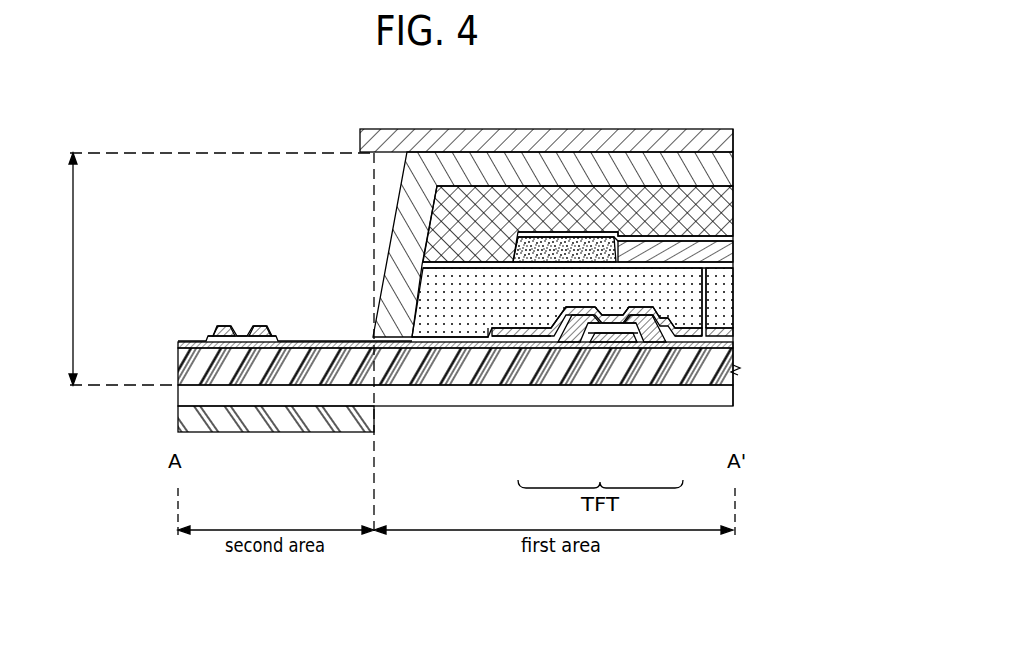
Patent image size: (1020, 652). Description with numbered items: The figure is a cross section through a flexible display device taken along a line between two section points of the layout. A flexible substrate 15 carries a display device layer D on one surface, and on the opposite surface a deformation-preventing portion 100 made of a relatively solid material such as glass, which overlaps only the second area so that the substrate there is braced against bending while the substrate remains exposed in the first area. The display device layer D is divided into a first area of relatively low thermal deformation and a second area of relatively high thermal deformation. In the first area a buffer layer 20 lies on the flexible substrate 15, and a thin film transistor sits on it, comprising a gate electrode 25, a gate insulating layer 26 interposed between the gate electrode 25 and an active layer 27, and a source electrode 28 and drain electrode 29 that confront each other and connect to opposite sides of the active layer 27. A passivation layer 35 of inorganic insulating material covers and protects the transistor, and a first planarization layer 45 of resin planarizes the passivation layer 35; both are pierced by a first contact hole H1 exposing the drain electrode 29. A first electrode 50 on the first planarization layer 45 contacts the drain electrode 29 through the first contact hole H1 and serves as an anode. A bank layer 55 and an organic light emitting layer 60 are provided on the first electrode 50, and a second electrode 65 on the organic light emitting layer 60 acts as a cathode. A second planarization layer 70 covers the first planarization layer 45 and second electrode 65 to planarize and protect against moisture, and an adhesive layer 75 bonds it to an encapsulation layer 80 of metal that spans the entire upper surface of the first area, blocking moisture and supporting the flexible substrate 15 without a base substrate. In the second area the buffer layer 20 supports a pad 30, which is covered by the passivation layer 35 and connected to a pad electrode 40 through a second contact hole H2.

The encapsulation layer 80 is at (735, 140).
The adhesive layer 75 is at (723, 168).
The second planarization layer 70 is at (723, 213).
The second electrode 65 is at (528, 233).
The organic light emitting layer 60 is at (723, 254).
The bank layer 55 is at (530, 250).
The first electrode 50 is at (726, 265).
The first planarization layer 45 is at (724, 298).
The passivation layer 35 is at (724, 336).
The pad electrode 40 is at (224, 322).
The pad 30 is at (232, 348).
The source electrode 28 is at (532, 348).
The gate insulating layer 26 is at (580, 348).
The gate electrode 25 is at (618, 348).
The active layer 27 is at (657, 348).
The drain electrode 29 is at (693, 348).
The buffer layer 20 is at (177, 352).
The flexible substrate 15 is at (177, 397).
The deformation-preventing portion 100 is at (177, 421).
The first contact hole H1 is at (693, 319).
The second contact hole H2 is at (244, 330).
The display device layer D is at (213, 269).